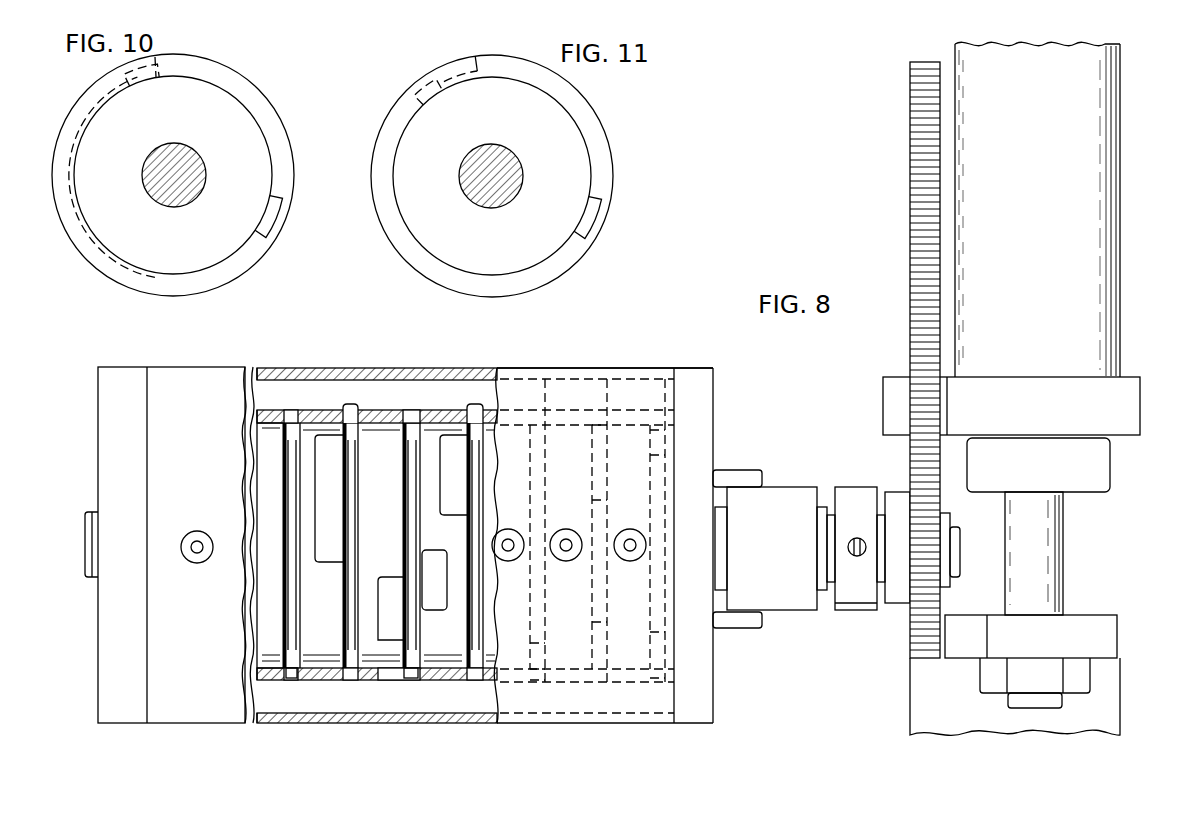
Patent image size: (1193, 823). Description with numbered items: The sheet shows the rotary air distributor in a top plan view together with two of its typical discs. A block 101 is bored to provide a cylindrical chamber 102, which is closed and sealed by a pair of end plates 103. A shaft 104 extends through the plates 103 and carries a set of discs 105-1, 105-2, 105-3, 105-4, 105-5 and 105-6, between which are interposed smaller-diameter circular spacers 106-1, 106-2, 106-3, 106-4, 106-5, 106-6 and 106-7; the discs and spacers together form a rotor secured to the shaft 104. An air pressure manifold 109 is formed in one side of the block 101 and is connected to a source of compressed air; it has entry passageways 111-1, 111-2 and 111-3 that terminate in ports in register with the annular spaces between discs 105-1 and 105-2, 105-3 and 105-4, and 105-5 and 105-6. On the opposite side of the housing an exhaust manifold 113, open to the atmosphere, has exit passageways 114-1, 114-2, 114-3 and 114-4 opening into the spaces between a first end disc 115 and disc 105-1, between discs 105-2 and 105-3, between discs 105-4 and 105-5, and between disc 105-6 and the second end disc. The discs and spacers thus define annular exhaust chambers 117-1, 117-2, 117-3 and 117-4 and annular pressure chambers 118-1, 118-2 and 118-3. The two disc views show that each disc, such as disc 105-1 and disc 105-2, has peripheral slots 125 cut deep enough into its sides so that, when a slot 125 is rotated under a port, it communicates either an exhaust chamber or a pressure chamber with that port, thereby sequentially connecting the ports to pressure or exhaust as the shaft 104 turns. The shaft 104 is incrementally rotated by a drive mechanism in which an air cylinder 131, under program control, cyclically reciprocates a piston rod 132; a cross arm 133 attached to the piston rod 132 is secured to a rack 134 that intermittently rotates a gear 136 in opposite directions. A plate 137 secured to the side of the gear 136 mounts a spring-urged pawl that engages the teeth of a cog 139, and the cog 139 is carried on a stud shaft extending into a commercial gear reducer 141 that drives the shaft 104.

In FIG. 8, the block 101 is at (658, 368).
In FIG. 8, the cylindrical chamber 102 is at (260, 428).
In FIG. 8, the end plates 103 is at (115, 372).
In FIG. 10, the shaft 104 is at (208, 172).
In FIG. 11, the shaft 104 is at (523, 168).
In FIG. 8, the shaft 104 is at (85, 517).
In FIG. 10, the disc 105-1 is at (243, 79).
In FIG. 8, the disc 105-1 is at (621, 425).
In FIG. 11, the disc 105-2 is at (597, 108).
In FIG. 8, the disc 105-2 is at (545, 380).
In FIG. 8, the disc 105-3 is at (494, 363).
In FIG. 8, the disc 105-4 is at (428, 430).
In FIG. 8, the disc 105-5 is at (385, 428).
In FIG. 8, the disc 105-6 is at (308, 428).
In FIG. 8, the circular spacer 106-1 is at (603, 623).
In FIG. 8, the circular spacer 106-2 is at (661, 631).
In FIG. 8, the circular spacer 106-3 is at (541, 643).
In FIG. 8, the circular spacer 106-4 is at (472, 492).
In FIG. 8, the circular spacer 106-5 is at (410, 562).
In FIG. 8, the circular spacer 106-6 is at (350, 488).
In FIG. 8, the circular spacer 106-7 is at (287, 465).
In FIG. 8, the air pressure manifold 109 is at (272, 398).
In FIG. 8, the entry passageway 111-1 is at (600, 380).
In FIG. 8, the entry passageway 111-2 is at (477, 412).
In FIG. 8, the entry passageway 111-3 is at (353, 412).
In FIG. 8, the exhaust manifold 113 is at (270, 690).
In FIG. 8, the exit passageway 114-1 is at (665, 678).
In FIG. 8, the exit passageway 114-2 is at (537, 680).
In FIG. 8, the exit passageway 114-3 is at (410, 680).
In FIG. 8, the exit passageway 114-4 is at (295, 680).
In FIG. 8, the first end disc 115 is at (668, 428).
In FIG. 8, the annular exhaust chamber 117-1 is at (658, 458).
In FIG. 8, the annular exhaust chamber 117-2 is at (537, 669).
In FIG. 8, the annular exhaust chamber 117-3 is at (413, 550).
In FIG. 8, the annular exhaust chamber 117-4 is at (290, 507).
In FIG. 8, the annular pressure chamber 118-1 is at (599, 499).
In FIG. 8, the annular pressure chamber 118-2 is at (475, 468).
In FIG. 8, the annular pressure chamber 118-3 is at (352, 533).
In FIG. 10, the peripheral slot 125 is at (120, 85).
In FIG. 11, the peripheral slot 125 is at (417, 85).
In FIG. 8, the peripheral slot 125 is at (445, 465).
In FIG. 8, the air cylinder 131 is at (1110, 160).
In FIG. 8, the piston rod 132 is at (1063, 535).
In FIG. 8, the cross arm 133 is at (1117, 636).
In FIG. 8, the rack 134 is at (912, 203).
In FIG. 8, the gear 136 is at (940, 596).
In FIG. 8, the plate 137 is at (890, 492).
In FIG. 8, the cog 139 is at (843, 610).
In FIG. 8, the gear reducer 141 is at (788, 492).